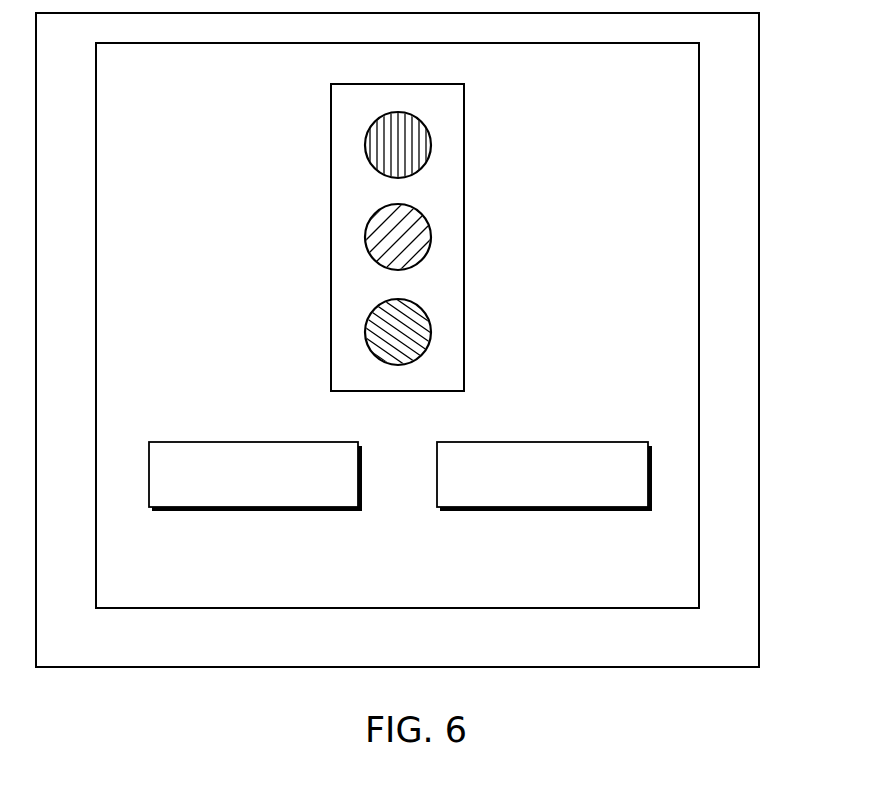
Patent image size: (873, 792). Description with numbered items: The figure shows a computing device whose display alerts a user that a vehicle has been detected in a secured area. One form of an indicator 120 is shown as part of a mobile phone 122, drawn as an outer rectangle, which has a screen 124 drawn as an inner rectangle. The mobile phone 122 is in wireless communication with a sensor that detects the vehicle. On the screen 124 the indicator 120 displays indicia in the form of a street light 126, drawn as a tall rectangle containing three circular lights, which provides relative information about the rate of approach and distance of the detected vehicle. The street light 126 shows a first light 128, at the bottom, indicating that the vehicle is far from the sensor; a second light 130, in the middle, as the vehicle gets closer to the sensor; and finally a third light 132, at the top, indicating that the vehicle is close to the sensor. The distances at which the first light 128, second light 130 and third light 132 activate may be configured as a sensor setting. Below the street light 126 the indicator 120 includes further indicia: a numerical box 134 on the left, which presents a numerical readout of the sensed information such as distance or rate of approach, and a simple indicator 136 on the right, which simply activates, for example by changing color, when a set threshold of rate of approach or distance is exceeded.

The indicator 120 is at (668, 361).
The mobile phone 122 is at (618, 653).
The screen 124 is at (618, 592).
The street light 126 is at (465, 192).
The first light 128 is at (364, 333).
The second light 130 is at (364, 238).
The third light 132 is at (364, 144).
The numerical box 134 is at (258, 509).
The simple indicator 136 is at (545, 509).